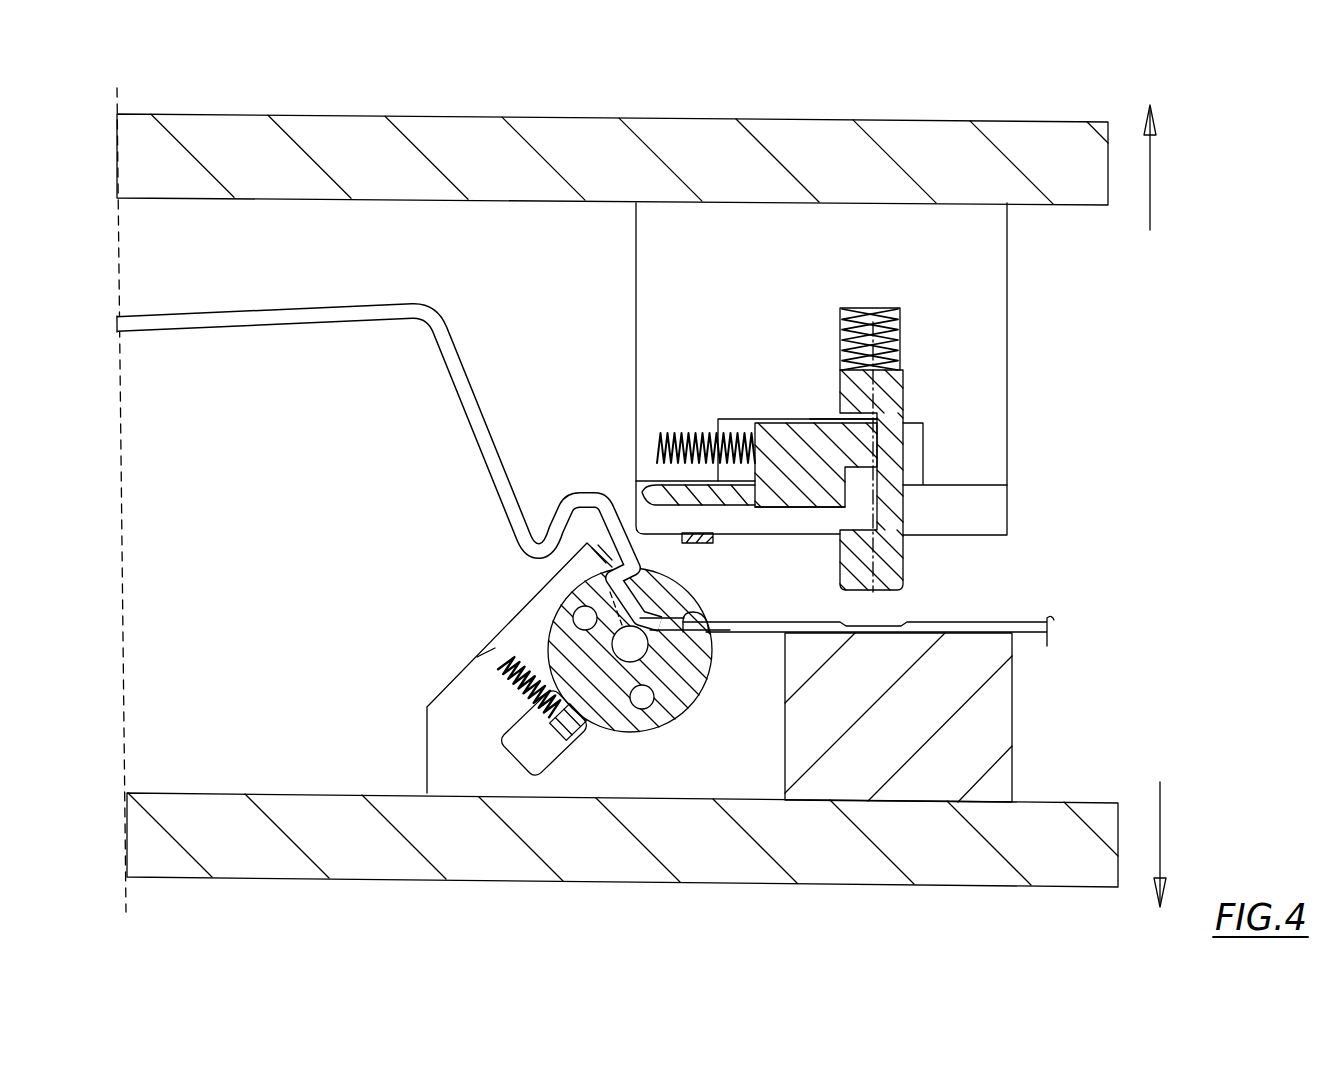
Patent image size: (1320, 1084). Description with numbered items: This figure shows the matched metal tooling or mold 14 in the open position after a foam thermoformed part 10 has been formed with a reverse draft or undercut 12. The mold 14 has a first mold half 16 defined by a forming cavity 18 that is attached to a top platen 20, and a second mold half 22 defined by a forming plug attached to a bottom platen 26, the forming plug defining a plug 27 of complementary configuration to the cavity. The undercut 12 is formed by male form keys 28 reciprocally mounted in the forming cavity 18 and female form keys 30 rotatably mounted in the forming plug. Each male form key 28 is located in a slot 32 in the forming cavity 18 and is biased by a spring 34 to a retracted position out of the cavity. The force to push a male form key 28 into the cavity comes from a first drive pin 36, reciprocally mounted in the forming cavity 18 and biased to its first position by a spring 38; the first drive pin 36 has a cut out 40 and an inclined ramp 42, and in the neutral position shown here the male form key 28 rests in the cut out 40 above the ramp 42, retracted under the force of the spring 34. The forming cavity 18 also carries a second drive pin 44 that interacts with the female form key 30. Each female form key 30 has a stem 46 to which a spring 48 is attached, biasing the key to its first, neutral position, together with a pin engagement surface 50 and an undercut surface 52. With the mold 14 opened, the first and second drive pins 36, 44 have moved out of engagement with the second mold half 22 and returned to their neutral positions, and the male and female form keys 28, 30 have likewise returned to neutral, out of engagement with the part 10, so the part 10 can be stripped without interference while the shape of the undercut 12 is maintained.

The thermoformed part 10 is at (452, 337).
The reverse draft or undercut 12 is at (622, 575).
The mold 14 is at (1232, 423).
The first mold half 16 is at (1166, 298).
The forming cavity 18 is at (990, 256).
The top platen 20 is at (343, 130).
The second mold half 22 is at (1063, 757).
The bottom platen 26 is at (251, 858).
The plug 27 is at (269, 513).
The male form keys 28 is at (773, 420).
The female form keys 30 is at (695, 690).
The slot 32 is at (912, 430).
The springs 34 is at (692, 430).
The first drive pins 36 is at (890, 380).
The spring 38 is at (881, 305).
The cut out 40 is at (838, 419).
The inclined ramp 42 is at (845, 520).
The second drive pins 44 is at (706, 545).
The stem 46 is at (597, 737).
The spring 48 is at (495, 657).
The pin engagement surface 50 is at (684, 612).
The undercut surface 52 is at (567, 575).